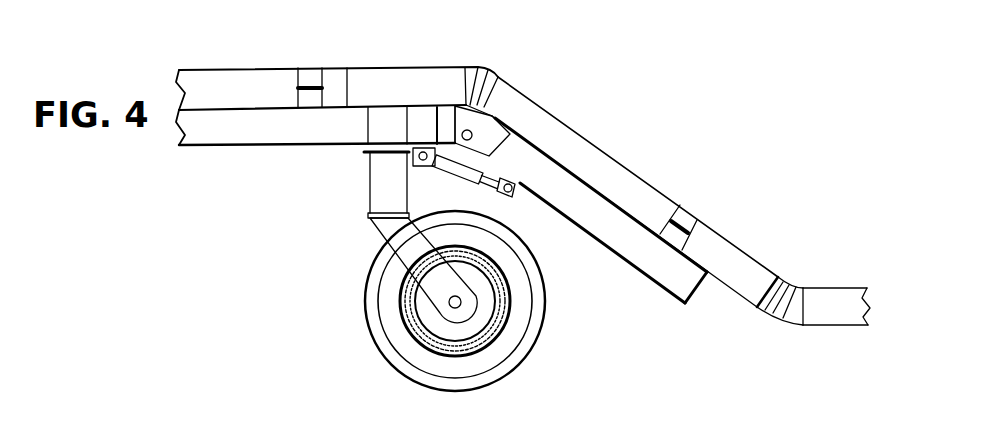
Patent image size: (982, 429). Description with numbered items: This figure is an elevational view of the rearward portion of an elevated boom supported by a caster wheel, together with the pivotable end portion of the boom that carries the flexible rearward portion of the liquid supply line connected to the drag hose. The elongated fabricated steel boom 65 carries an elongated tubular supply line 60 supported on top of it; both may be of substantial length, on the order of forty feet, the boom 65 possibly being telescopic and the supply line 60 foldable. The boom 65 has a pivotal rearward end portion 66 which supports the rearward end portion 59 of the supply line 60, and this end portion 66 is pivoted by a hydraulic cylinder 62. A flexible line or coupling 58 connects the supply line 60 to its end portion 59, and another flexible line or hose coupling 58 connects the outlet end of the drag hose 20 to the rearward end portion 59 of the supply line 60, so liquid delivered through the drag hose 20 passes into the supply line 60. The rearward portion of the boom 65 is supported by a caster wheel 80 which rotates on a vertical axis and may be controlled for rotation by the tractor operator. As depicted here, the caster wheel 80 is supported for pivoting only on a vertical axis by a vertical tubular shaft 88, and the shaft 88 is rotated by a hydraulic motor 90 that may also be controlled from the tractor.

The drag hose 20 is at (828, 298).
The flexible line or hose coupling 58 is at (492, 65).
The rearward end portion of supply line 59 is at (600, 158).
The elongated tubular supply line 60 is at (234, 80).
The hydraulic cylinder 62 is at (463, 175).
The elongated fabricated steel boom 65 is at (268, 128).
The pivotal rearward end portion of boom 66 is at (602, 220).
The caster wheel 80 is at (372, 349).
The vertical tubular shaft 88 is at (380, 192).
The hydraulic motor 90 is at (367, 127).